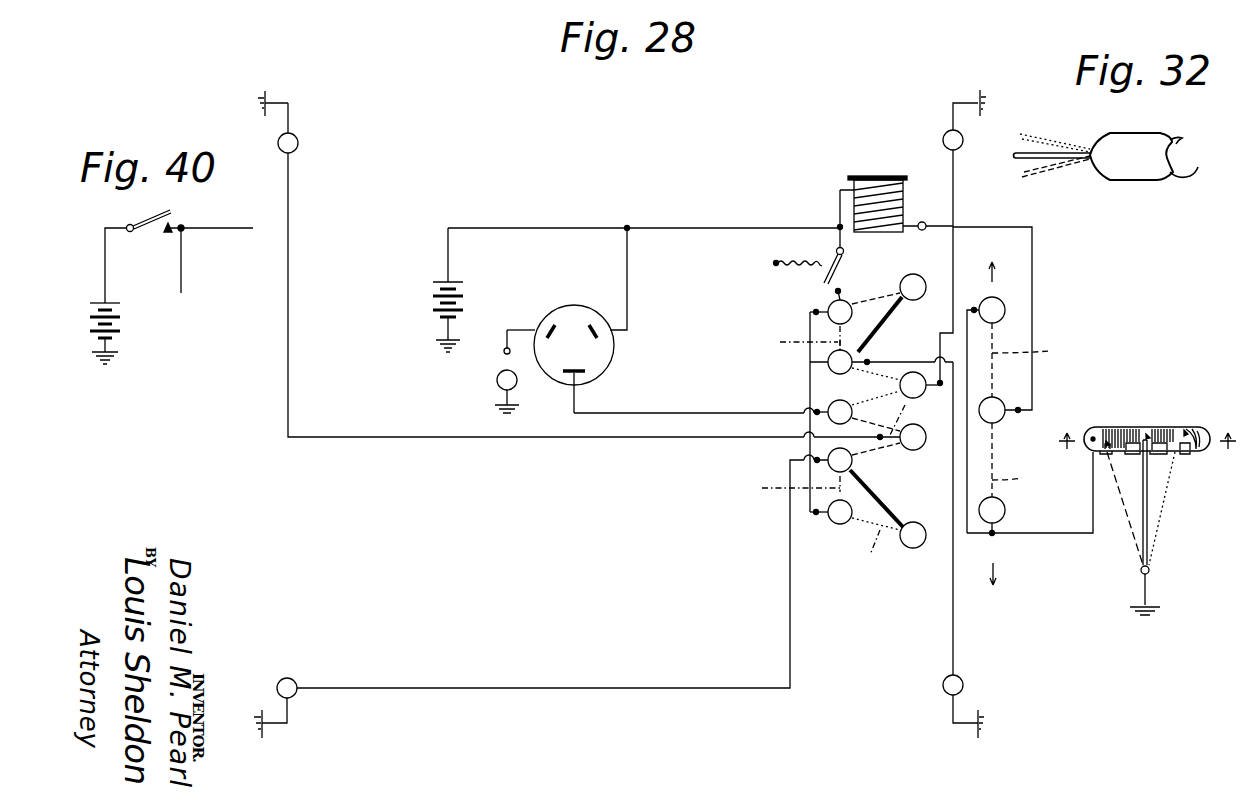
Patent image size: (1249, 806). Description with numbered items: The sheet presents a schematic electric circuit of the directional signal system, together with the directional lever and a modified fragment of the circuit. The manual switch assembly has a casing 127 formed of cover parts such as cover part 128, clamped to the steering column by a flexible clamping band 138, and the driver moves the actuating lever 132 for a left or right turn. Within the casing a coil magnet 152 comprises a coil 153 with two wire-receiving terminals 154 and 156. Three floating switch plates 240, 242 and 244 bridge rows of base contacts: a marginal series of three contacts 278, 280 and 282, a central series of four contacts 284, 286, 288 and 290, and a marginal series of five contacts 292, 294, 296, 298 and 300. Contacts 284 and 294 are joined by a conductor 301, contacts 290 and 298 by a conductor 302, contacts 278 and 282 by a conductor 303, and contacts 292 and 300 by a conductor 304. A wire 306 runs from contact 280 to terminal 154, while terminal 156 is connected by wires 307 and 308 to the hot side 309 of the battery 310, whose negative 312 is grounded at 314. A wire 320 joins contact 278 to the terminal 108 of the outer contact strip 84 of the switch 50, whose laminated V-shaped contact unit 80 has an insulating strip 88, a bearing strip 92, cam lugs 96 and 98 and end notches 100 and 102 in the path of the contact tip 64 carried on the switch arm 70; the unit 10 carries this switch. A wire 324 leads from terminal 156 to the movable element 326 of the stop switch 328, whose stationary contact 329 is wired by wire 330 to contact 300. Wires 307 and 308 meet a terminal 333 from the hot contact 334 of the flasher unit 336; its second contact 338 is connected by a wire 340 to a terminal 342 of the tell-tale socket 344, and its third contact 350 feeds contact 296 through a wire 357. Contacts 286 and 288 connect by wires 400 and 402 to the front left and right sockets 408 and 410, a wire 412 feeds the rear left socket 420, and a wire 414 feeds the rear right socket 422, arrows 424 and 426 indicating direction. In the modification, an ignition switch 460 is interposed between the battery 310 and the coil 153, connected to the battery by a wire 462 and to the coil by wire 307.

In FIG. 28, the vibratory switching unit 10 is at (1146, 448).
In FIG. 28, the switch 50 is at (1172, 512).
In FIG. 28, the switch arm contact tip 64 is at (1147, 505).
In FIG. 28, the central contact stem 70 is at (1150, 432).
In FIG. 28, the contact unit 80 is at (1143, 422).
In FIG. 28, the outer contact strip 84 is at (1112, 432).
In FIG. 28, the insulating strip 88 is at (1189, 428).
In FIG. 28, the bearing strip 92 is at (1206, 432).
In FIG. 28, the lateral cam lug 96 is at (1128, 432).
In FIG. 28, the lateral cam lug 98 is at (1158, 432).
In FIG. 28, the end notch 100 is at (1102, 430).
In FIG. 28, the end notch 102 is at (1182, 456).
In FIG. 28, the flange of insulating strip 108 is at (1088, 432).
In FIG. 32, the casing 127 is at (1119, 130).
In FIG. 32, the cover part 128 is at (1140, 136).
In FIG. 32, the actuating lever 132 is at (1024, 165).
In FIG. 32, the clamping band 138 is at (1191, 183).
In FIG. 28, the coil magnet 152 is at (890, 169).
In FIG. 28, the coil 153 is at (904, 194).
In FIG. 28, the terminal 154 is at (922, 222).
In FIG. 28, the terminal 156 is at (838, 226).
In FIG. 28, the switch plate 240 is at (819, 456).
In FIG. 28, the switch plate 242 is at (870, 285).
In FIG. 28, the switch plate 244 is at (1039, 410).
In FIG. 28, the base contact 278 is at (1005, 508).
In FIG. 28, the base contact 280 is at (998, 423).
In FIG. 28, the base contact 282 is at (1005, 303).
In FIG. 28, the base contact 284 is at (911, 548).
In FIG. 28, the base contact 286 is at (894, 445).
In FIG. 28, the base contact 288 is at (900, 384).
In FIG. 28, the base contact 290 is at (924, 262).
In FIG. 28, the base contact 292 is at (838, 522).
In FIG. 28, the base contact 294 is at (852, 464).
In FIG. 28, the base contact 296 is at (800, 408).
In FIG. 28, the base contact 298 is at (800, 360).
In FIG. 28, the base contact 300 is at (810, 309).
In FIG. 28, the conductor 301 is at (884, 502).
In FIG. 28, the conductor 302 is at (882, 324).
In FIG. 28, the conductor 303 is at (972, 311).
In FIG. 28, the conductor 304 is at (808, 326).
In FIG. 28, the wire 306 is at (1032, 327).
In FIG. 28, the wire 307 is at (714, 226).
In FIG. 40, the wire 307 is at (182, 235).
In FIG. 28, the wire 308 is at (618, 228).
In FIG. 28, the hot side of battery 309 is at (450, 282).
In FIG. 40, the hot side of battery 309 is at (103, 302).
In FIG. 28, the vehicle battery 310 is at (476, 301).
In FIG. 40, the vehicle battery 310 is at (130, 319).
In FIG. 28, the negative of battery 312 is at (437, 318).
In FIG. 40, the negative of battery 312 is at (116, 328).
In FIG. 28, the ground 314 is at (437, 357).
In FIG. 40, the ground 314 is at (117, 366).
In FIG. 28, the wire 320 is at (1093, 515).
In FIG. 28, the wire 324 is at (835, 244).
In FIG. 28, the movable element 326 is at (778, 266).
In FIG. 28, the stop switch 328 is at (834, 276).
In FIG. 28, the stationary contact 329 is at (842, 285).
In FIG. 28, the wire 330 is at (834, 290).
In FIG. 28, the terminal 333 is at (630, 230).
In FIG. 40, the terminal 333 is at (182, 240).
In FIG. 28, the hot contact 334 is at (600, 344).
In FIG. 28, the flasher unit 336 is at (579, 300).
In FIG. 28, the second contact 338 is at (571, 342).
In FIG. 28, the wire 340 is at (519, 330).
In FIG. 28, the terminal 342 is at (505, 352).
In FIG. 28, the socket 344 is at (497, 382).
In FIG. 28, the third contact 350 is at (586, 372).
In FIG. 28, the conductor 357 is at (711, 412).
In FIG. 28, the wire 400 is at (604, 438).
In FIG. 28, the wire 402 is at (955, 260).
In FIG. 28, the front left directional light socket 408 is at (296, 148).
In FIG. 28, the front right directional light socket 410 is at (944, 138).
In FIG. 28, the wire 412 is at (572, 688).
In FIG. 28, the wire 414 is at (955, 618).
In FIG. 28, the rear left directional light socket 420 is at (292, 678).
In FIG. 28, the rear right directional light socket 422 is at (963, 683).
In FIG. 28, the arrow indicator 424 is at (998, 272).
In FIG. 28, the arrow indicator 426 is at (996, 570).
In FIG. 40, the ignition switch 460 is at (153, 230).
In FIG. 40, the wire 462 is at (105, 240).